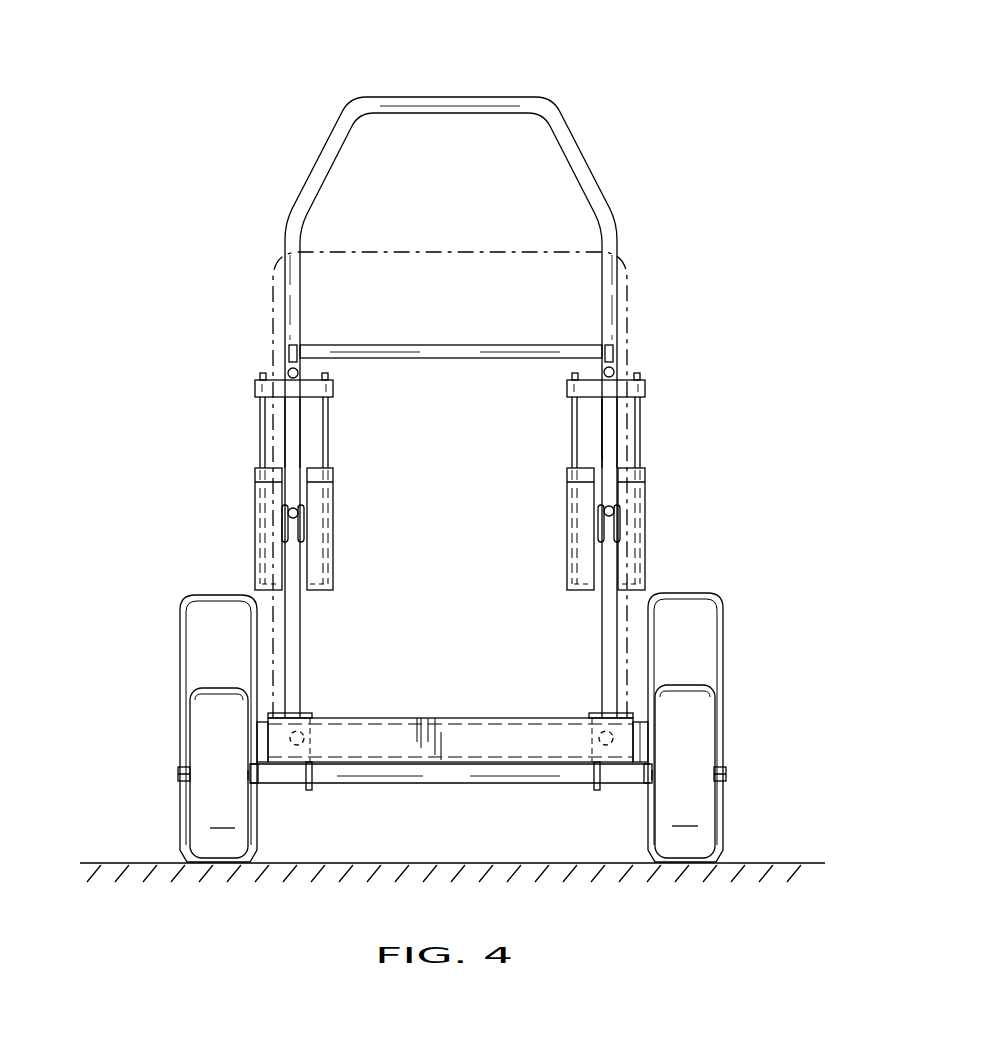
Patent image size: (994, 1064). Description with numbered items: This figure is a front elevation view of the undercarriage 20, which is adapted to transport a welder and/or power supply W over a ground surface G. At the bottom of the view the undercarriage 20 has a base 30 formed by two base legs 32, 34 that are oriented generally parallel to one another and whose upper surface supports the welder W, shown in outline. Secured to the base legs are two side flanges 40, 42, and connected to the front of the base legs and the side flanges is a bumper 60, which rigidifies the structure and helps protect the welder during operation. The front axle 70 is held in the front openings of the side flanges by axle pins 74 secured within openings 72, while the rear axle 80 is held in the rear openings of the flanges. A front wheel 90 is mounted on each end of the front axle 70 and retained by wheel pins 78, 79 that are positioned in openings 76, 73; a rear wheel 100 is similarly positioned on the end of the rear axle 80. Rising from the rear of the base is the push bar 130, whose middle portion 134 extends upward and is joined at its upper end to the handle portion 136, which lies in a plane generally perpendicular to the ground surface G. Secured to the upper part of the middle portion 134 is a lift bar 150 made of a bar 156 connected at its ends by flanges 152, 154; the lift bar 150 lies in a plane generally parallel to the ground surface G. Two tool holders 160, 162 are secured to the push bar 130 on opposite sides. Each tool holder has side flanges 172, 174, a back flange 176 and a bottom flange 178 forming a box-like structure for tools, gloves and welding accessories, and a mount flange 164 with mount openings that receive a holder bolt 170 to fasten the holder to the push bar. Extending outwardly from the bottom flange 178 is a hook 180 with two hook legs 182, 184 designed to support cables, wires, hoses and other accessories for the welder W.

The undercarriage 20 is at (722, 484).
The base 30 is at (448, 706).
The base leg 32 is at (605, 712).
The base leg 34 is at (292, 713).
The side flange 40 is at (308, 796).
The side flange 42 is at (593, 796).
The bumper 60 is at (403, 752).
The front axle 70 is at (483, 776).
The opening 72 is at (316, 765).
The opening 73 is at (256, 780).
The axle pin 74 is at (312, 773).
The opening 76 is at (180, 778).
The wheel pin 78 is at (180, 772).
The wheel pin 79 is at (250, 776).
The rear axle 80 is at (648, 726).
The front wheel 90 is at (203, 718).
The rear wheel 100 is at (196, 632).
The push bar 130 is at (622, 300).
The middle portion 134 is at (612, 432).
The handle portion 136 is at (490, 97).
The lift bar 150 is at (438, 344).
The flange 152 is at (290, 347).
The flange 154 is at (613, 347).
The bar 156 is at (499, 350).
The tool holder 160 is at (250, 448).
The tool holder 162 is at (647, 449).
The mount flange 164 is at (322, 390).
The holder bolt 170 is at (300, 360).
The side flange 172 is at (262, 410).
The side flange 174 is at (330, 424).
The back flange 176 is at (316, 448).
The bottom flange 178 is at (315, 572).
The hook 180 is at (335, 502).
The hook leg 182 is at (257, 492).
The hook leg 184 is at (330, 482).
The welder W is at (630, 272).
The ground surface G is at (115, 860).